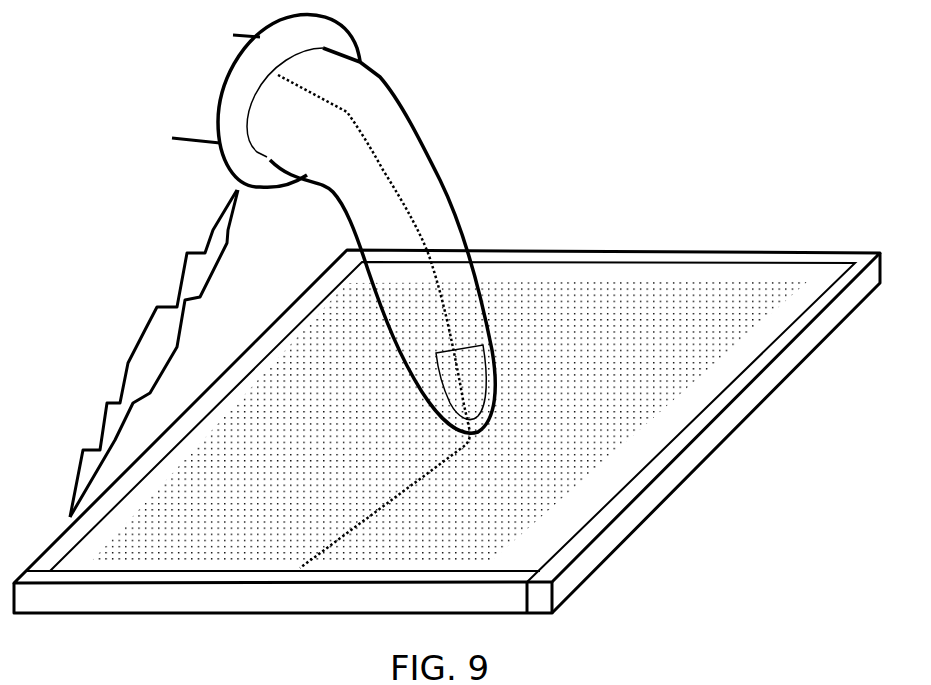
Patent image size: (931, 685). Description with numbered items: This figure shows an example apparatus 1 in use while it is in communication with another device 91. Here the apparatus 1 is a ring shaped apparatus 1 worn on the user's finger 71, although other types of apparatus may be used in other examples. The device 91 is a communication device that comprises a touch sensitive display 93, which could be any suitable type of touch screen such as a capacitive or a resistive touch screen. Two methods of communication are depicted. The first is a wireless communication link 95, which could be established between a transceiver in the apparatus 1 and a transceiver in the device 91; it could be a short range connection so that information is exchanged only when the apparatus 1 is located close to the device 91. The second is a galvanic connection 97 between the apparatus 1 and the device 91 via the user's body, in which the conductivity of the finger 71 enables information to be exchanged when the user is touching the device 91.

The apparatus 1 is at (357, 42).
The finger 71 is at (400, 117).
The galvanic connection 97 is at (423, 223).
The wireless communication link 95 is at (143, 331).
The touch sensitive display 93 is at (748, 280).
The device 91 is at (770, 390).